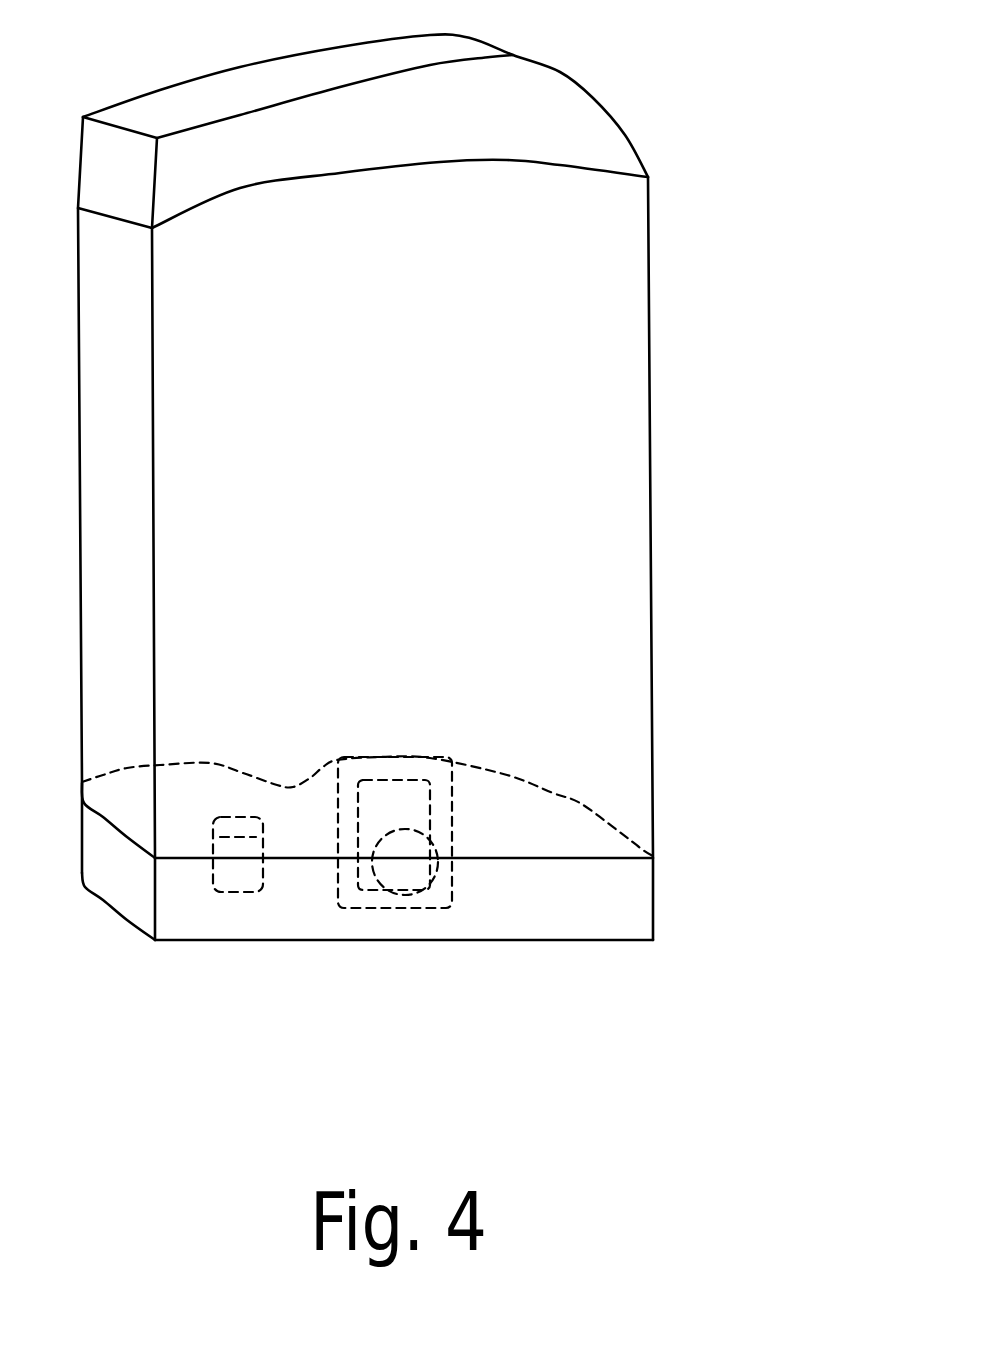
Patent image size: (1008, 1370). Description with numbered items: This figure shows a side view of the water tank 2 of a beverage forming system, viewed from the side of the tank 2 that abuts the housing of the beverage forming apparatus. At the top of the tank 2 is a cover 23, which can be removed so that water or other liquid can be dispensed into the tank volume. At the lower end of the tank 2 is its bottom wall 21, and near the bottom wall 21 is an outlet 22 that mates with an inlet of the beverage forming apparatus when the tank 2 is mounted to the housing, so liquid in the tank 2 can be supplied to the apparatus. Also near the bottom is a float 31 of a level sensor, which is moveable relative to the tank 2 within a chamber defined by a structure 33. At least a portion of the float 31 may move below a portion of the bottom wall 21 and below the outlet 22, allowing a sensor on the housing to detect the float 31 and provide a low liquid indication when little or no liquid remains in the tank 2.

The tank 2 is at (652, 425).
The bottom wall 21 is at (602, 860).
The outlet 22 is at (227, 873).
The cover 23 is at (593, 108).
The float 31 is at (412, 875).
The structure 33 is at (450, 822).